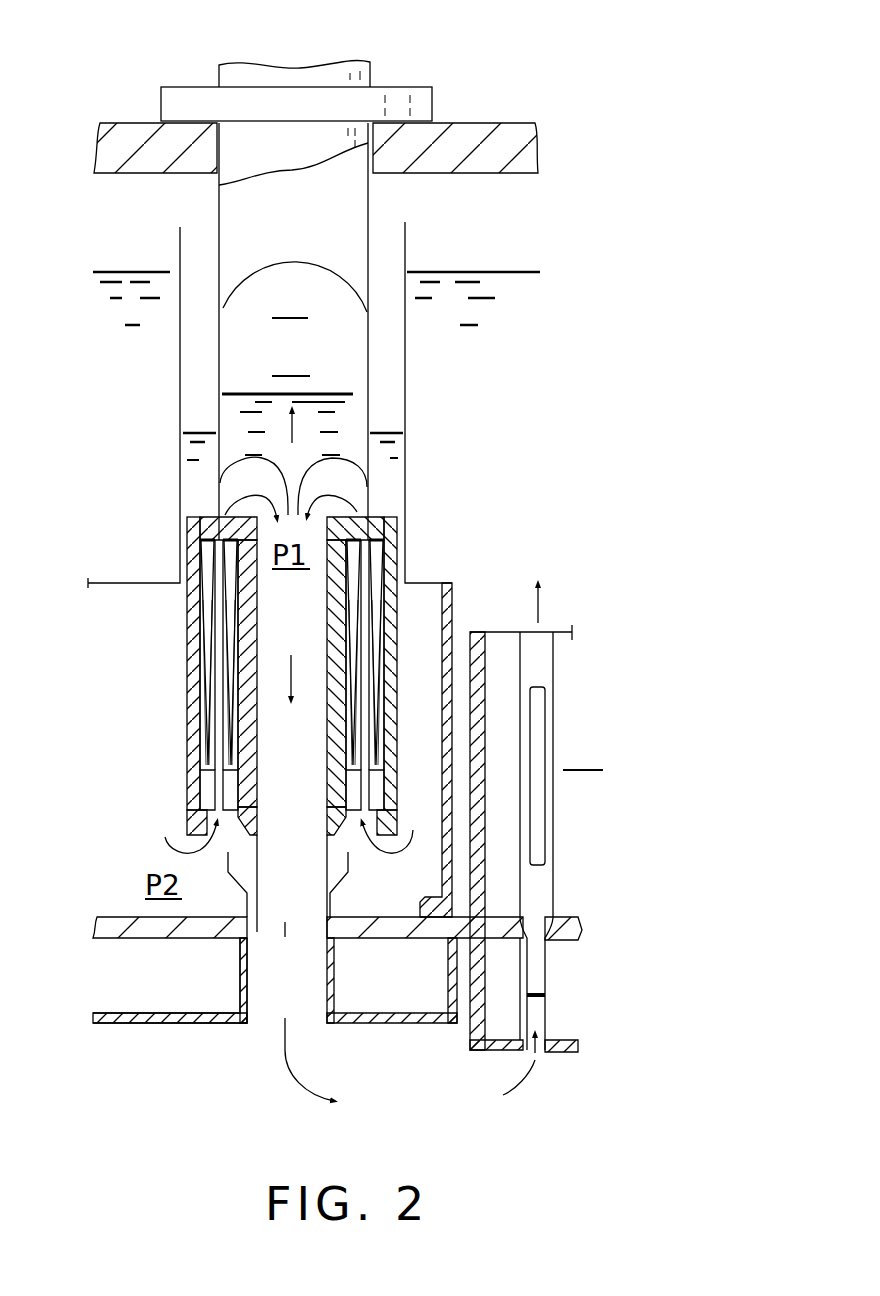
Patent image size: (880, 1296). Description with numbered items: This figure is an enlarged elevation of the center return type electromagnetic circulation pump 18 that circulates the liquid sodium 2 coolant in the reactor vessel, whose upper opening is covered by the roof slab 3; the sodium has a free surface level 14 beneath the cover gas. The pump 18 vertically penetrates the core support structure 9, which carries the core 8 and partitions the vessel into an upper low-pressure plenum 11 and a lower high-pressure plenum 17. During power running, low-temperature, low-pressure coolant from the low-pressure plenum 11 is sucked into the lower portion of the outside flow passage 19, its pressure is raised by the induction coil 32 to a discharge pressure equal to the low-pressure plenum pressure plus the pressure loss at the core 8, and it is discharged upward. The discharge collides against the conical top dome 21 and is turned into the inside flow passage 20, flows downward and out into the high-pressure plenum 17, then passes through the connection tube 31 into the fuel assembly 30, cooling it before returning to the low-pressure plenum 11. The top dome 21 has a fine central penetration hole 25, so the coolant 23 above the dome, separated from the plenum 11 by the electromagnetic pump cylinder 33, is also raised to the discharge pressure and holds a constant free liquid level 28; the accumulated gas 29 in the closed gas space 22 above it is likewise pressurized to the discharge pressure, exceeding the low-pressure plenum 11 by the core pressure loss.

The liquid sodium 2 is at (442, 376).
The roof slab 3 is at (485, 122).
The core 8 is at (505, 665).
The core support structure 9 is at (562, 917).
The low-pressure plenum 11 is at (556, 616).
The free surface level 14 is at (480, 272).
The high-pressure plenum 17 is at (270, 1048).
The electromagnetic circulation pump 18 is at (187, 630).
The outside flow passage 19 is at (217, 772).
The inside flow passage 20 is at (287, 928).
The top dome 21 is at (220, 457).
The closed gas space 22 is at (243, 308).
The coolant 23 is at (232, 423).
The central penetration hole 25 is at (287, 485).
The free liquid level 28 is at (247, 393).
The accumulated gas 29 is at (291, 333).
The fuel assembly 30 is at (553, 818).
The connection tube 31 is at (547, 1012).
The induction coil 32 is at (208, 738).
The electromagnetic pump cylinder 33 is at (220, 328).